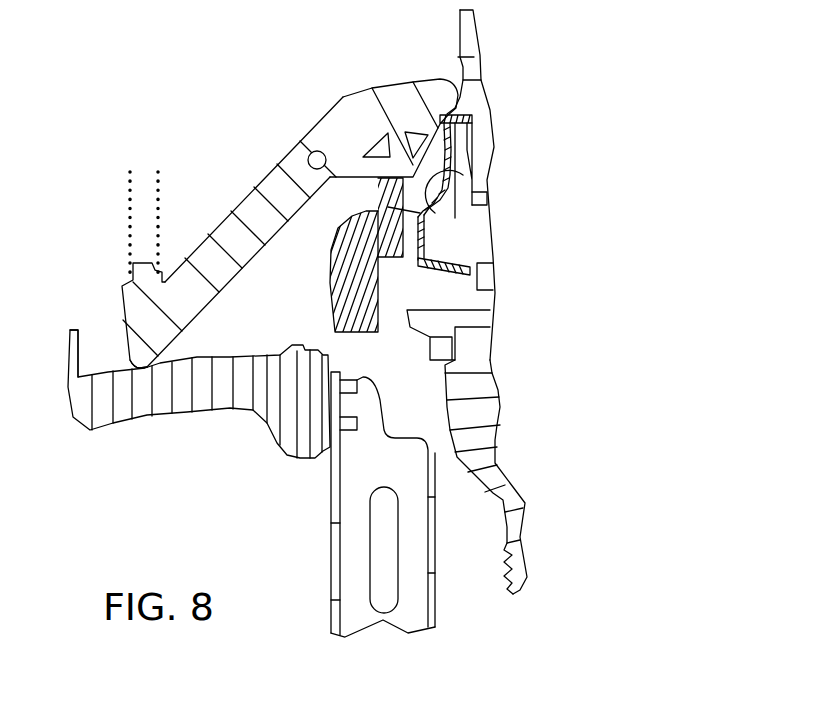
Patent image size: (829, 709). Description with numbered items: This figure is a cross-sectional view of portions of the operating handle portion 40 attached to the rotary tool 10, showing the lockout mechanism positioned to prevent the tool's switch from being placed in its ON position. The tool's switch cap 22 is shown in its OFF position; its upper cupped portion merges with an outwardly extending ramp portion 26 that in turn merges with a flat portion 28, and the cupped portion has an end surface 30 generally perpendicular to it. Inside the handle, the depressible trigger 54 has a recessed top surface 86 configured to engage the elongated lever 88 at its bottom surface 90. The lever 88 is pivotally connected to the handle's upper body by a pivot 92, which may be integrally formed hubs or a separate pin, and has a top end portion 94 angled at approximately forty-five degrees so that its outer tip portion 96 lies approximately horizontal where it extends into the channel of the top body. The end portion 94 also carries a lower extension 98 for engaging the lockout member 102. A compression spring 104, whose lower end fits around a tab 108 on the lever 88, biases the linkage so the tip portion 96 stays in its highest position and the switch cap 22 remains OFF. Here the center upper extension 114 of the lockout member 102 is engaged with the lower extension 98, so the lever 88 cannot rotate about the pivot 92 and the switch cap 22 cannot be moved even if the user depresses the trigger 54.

The rotary tool 10 is at (535, 391).
The switch cap 22 is at (415, 272).
The ramp portion 26 is at (415, 170).
The flat portion 28 is at (423, 255).
The end surface 30 is at (476, 97).
The handle portion 40 is at (248, 130).
The depressible trigger 54 is at (144, 395).
The recessed top surface 86 is at (115, 370).
The elongated lever 88 is at (237, 228).
The bottom surface 90 is at (149, 366).
The pivot 92 is at (313, 152).
The top end portion 94 is at (403, 100).
The outer tip portion 96 is at (450, 95).
The lower extension 98 is at (352, 178).
The lockout member 102 is at (320, 296).
The compression spring 104 is at (130, 203).
The tab 108 is at (140, 273).
The center upper extension 114 is at (428, 220).